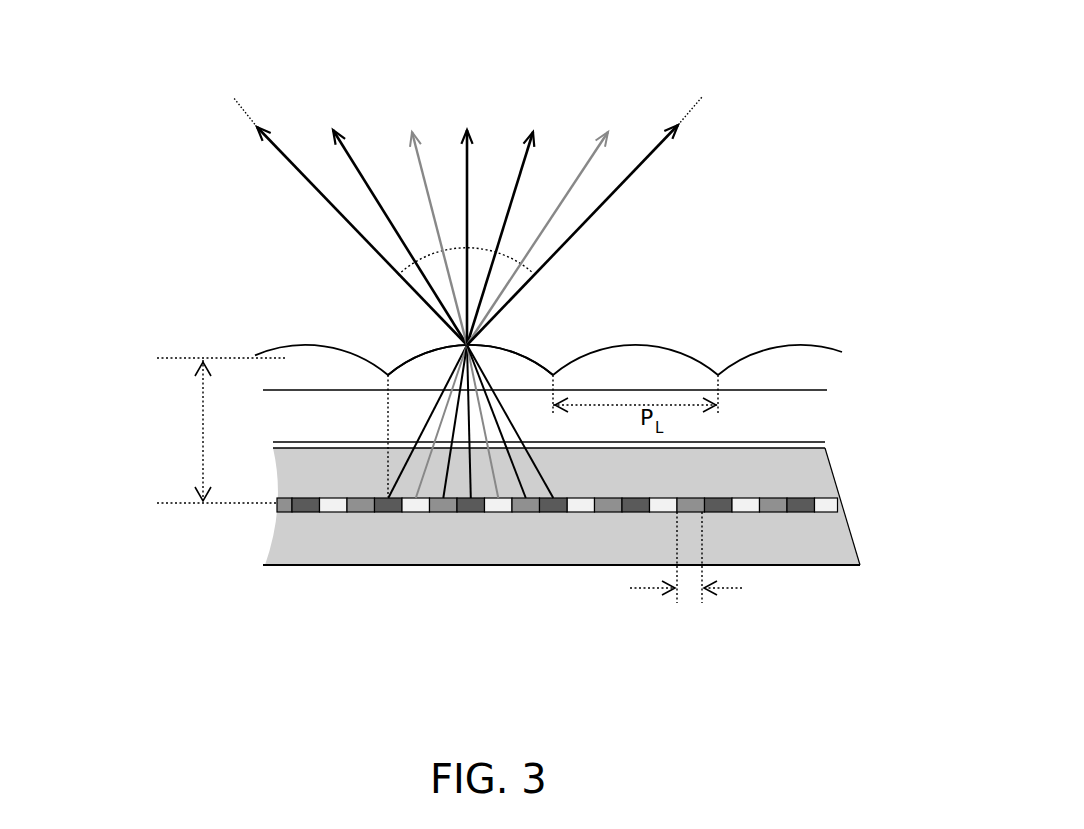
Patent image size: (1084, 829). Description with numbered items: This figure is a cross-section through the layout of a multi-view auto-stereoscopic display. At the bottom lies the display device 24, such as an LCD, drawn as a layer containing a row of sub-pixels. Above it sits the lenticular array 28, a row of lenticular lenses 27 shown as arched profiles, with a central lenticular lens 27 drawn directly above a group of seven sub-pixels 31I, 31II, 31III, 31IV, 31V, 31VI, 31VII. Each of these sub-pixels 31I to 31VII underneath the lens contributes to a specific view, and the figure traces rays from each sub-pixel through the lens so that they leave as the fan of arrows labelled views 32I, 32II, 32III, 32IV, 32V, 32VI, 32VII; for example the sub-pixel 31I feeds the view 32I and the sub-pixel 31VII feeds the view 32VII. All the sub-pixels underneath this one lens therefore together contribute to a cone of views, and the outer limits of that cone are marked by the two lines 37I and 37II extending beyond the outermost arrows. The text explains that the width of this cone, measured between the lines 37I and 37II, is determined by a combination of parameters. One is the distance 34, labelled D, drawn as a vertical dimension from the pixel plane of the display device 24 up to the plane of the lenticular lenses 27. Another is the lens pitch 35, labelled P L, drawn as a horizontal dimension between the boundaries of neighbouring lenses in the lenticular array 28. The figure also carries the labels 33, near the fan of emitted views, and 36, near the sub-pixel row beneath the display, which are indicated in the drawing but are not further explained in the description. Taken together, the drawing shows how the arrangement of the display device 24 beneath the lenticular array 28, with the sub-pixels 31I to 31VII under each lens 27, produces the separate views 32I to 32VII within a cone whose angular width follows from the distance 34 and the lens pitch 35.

The display device 24 is at (897, 440).
The lenticular lens 27 is at (430, 357).
The lenticular array 28 is at (897, 332).
The sub-pixel 31I is at (378, 507).
The sub-pixel 31II is at (400, 514).
The sub-pixel 31III is at (433, 516).
The sub-pixel 31IV is at (463, 516).
The sub-pixel 31V is at (500, 516).
The sub-pixel 31VI is at (527, 516).
The sub-pixel 31VII is at (565, 518).
The view 32I is at (601, 183).
The view 32II is at (561, 183).
The view 32III is at (521, 183).
The view 32IV is at (469, 183).
The view 32V is at (416, 183).
The view 32VI is at (368, 183).
The view 32VII is at (318, 183).
The angular range of beams 33 is at (503, 243).
The distance 34 is at (203, 415).
The lens pitch 35 is at (643, 370).
The pixel pitch 36 is at (680, 586).
The cone boundary line 37I is at (247, 115).
The cone boundary line 37II is at (693, 115).